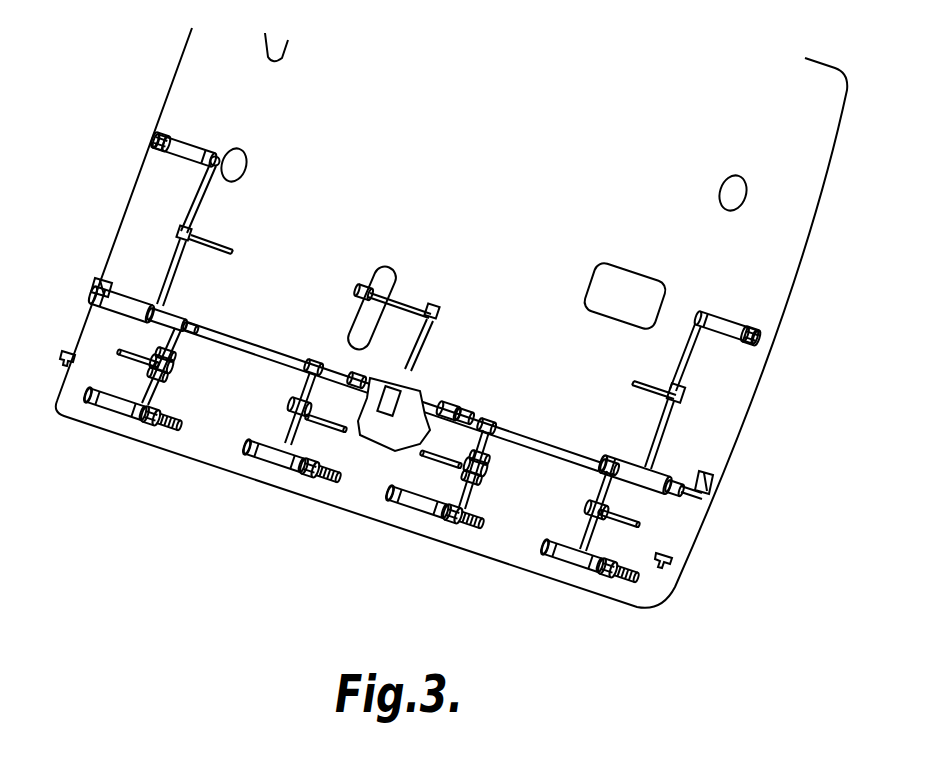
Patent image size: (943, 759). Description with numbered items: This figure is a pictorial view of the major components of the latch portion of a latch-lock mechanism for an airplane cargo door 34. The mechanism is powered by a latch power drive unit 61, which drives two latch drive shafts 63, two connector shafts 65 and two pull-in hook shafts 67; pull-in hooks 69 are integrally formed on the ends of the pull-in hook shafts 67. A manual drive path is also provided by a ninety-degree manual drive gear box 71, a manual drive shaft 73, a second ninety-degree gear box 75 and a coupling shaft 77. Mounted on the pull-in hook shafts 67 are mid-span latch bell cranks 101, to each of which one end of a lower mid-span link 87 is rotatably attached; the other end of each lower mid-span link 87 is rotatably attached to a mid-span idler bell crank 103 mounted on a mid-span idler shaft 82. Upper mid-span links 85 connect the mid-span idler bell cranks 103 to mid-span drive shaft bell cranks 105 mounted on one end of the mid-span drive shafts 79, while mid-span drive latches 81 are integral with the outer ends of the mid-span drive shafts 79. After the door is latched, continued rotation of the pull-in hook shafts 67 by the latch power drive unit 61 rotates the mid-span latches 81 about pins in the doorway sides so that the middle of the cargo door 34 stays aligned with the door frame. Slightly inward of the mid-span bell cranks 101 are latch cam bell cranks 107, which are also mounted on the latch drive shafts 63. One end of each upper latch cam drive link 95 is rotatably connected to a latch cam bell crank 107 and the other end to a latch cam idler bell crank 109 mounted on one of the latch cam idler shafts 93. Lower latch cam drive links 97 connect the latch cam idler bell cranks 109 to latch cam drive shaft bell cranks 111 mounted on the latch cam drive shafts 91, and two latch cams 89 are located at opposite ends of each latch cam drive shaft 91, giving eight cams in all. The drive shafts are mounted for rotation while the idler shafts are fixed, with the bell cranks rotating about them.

The cargo door 34 is at (790, 258).
The latch power drive unit 61 is at (418, 385).
The latch drive shafts 63 is at (328, 384).
The connector shafts 65 is at (236, 340).
The pull-in hook shafts 67 is at (128, 288).
The pull-in hooks 69 is at (100, 285).
The manual drive gear box 71 is at (364, 290).
The manual drive shaft 73 is at (400, 310).
The gear box 75 is at (435, 308).
The coupling shaft 77 is at (432, 340).
The mid-span drive shafts 79 is at (190, 150).
The mid-span drive latches 81 is at (163, 142).
The mid-span idler shafts 82 is at (228, 251).
The upper mid-span links 85 is at (206, 197).
The lower mid-span links 87 is at (170, 283).
The latch cams 89 is at (93, 405).
The latch cam drive shafts 91 is at (118, 418).
The latch cam idler shafts 93 is at (168, 380).
The upper latch cam drive links 95 is at (170, 358).
The lower latch cam drive links 97 is at (155, 400).
The mid-span latch bell cranks 101 is at (155, 320).
The mid-span idler bell cranks 103 is at (182, 230).
The mid-span drive shaft bell cranks 105 is at (218, 156).
The latch cam bell cranks 107 is at (192, 319).
The latch cam idler bell cranks 109 is at (148, 352).
The latch cam drive shaft bell cranks 111 is at (140, 420).